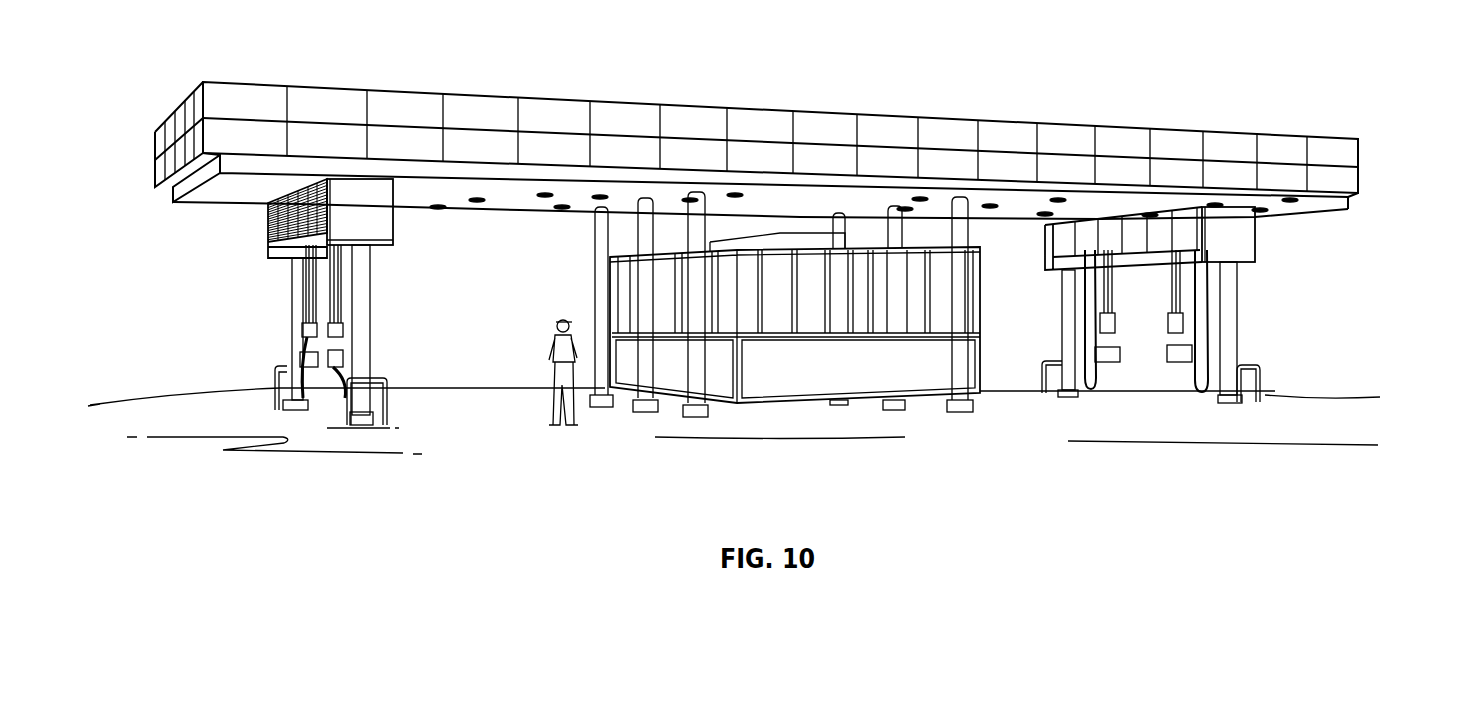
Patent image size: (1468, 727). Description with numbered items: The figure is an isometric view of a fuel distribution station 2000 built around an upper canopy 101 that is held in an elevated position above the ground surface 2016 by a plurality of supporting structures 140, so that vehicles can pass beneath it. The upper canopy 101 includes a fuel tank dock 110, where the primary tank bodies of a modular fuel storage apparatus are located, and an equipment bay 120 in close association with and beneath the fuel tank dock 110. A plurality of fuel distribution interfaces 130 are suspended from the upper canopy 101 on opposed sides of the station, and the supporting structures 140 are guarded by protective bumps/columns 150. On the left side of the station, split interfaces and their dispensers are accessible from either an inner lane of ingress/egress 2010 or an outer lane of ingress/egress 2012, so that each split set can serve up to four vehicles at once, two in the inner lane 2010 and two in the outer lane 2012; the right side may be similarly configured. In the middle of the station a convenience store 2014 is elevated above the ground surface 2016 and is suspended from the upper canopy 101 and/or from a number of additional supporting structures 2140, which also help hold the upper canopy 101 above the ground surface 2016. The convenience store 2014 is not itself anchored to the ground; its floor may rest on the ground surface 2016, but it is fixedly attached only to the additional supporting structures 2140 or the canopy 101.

The fuel distribution station 2000 is at (1234, 49).
The upper canopy 101 is at (1378, 143).
The fuel tank dock 110 is at (165, 136).
The equipment bay 120 is at (270, 228).
The fuel distribution interface 130 is at (258, 350).
The supporting structure 140 is at (291, 306).
The protective bump/column 150 is at (390, 380).
The additional supporting structure 2140 is at (597, 248).
The convenience store 2014 is at (960, 345).
The ground surface 2016 is at (776, 494).
The inner lane of ingress/egress 2010 is at (420, 427).
The outer lane of ingress/egress 2012 is at (200, 463).